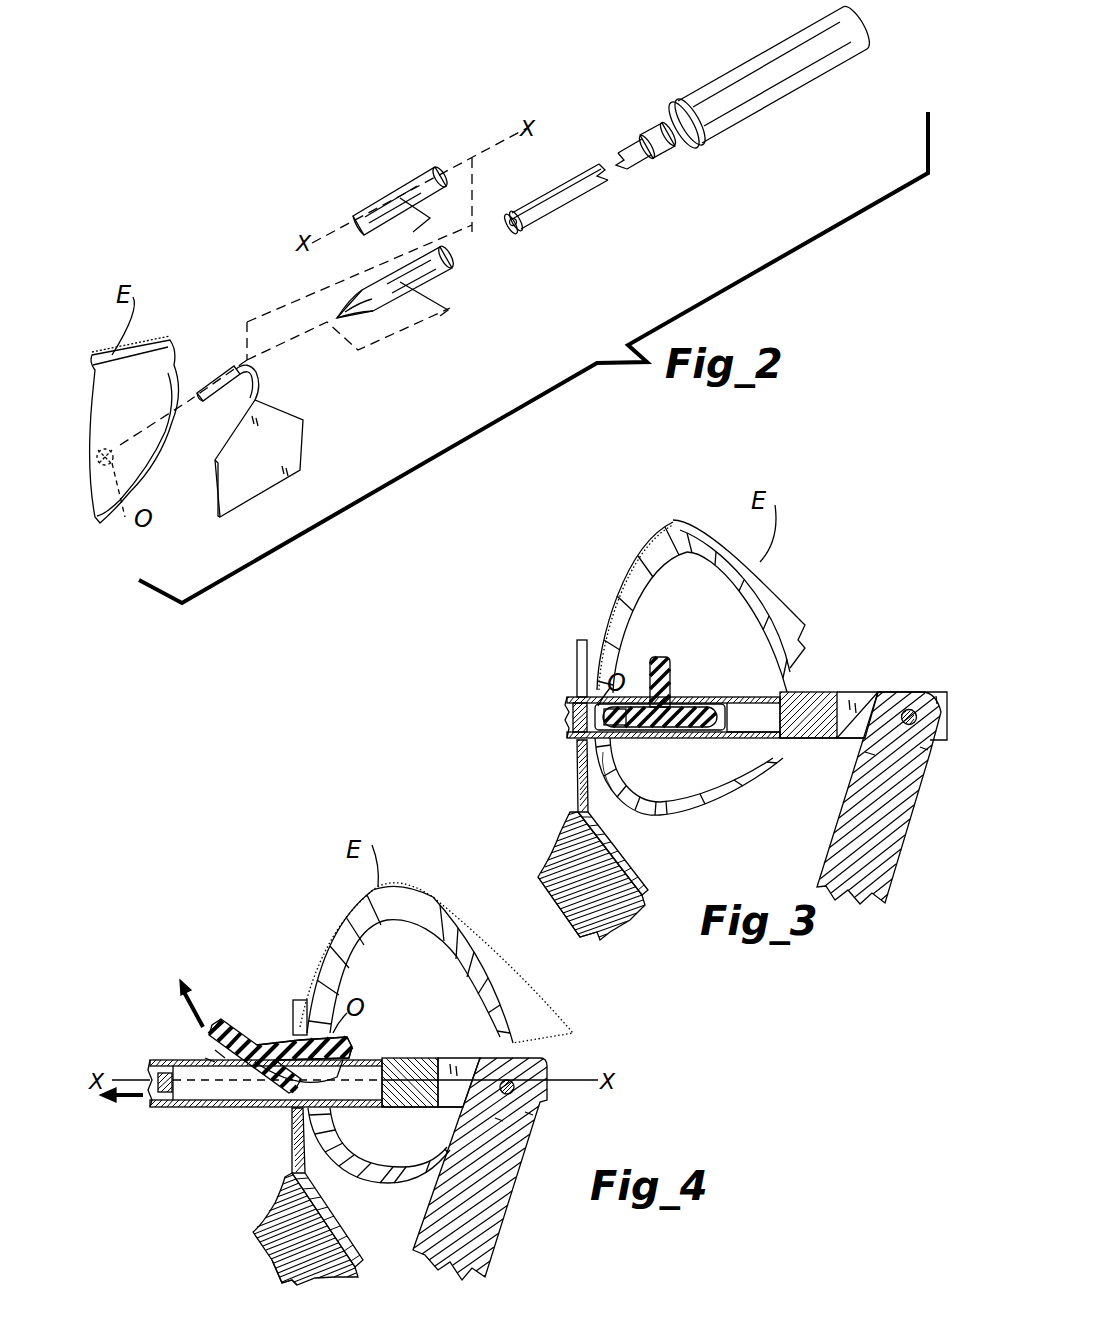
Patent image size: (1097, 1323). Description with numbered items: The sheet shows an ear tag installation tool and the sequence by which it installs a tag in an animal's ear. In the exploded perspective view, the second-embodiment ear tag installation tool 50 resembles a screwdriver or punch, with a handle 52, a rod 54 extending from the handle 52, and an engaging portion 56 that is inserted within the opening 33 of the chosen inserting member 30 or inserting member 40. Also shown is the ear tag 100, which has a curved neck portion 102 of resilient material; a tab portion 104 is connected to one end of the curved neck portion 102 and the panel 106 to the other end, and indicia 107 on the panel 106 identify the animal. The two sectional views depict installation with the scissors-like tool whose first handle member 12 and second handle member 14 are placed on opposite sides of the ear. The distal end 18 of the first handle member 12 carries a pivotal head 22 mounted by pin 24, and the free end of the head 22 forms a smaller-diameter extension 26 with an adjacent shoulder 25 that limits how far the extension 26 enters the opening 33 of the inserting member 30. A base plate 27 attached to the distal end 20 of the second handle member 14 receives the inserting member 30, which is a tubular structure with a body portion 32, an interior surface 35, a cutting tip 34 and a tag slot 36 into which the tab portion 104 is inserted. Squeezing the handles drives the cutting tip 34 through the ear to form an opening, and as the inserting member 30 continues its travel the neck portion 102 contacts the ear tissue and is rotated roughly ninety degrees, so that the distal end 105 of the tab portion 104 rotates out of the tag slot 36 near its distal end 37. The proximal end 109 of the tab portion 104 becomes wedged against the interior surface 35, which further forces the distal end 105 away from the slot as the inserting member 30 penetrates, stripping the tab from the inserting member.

In FIG. 3, the first handle member 12 is at (881, 761).
In FIG. 4, the first handle member 12 is at (502, 1169).
In FIG. 3, the second handle member 14 is at (598, 930).
In FIG. 4, the second handle member 14 is at (280, 1250).
In FIG. 3, the distal end of the first handle member 18 is at (918, 760).
In FIG. 4, the distal end of the first handle member 18 is at (513, 1112).
In FIG. 3, the distal end of the second handle member 20 is at (570, 892).
In FIG. 4, the distal end of the second handle member 20 is at (267, 1229).
In FIG. 3, the pivotal head 22 is at (860, 693).
In FIG. 4, the pivotal head 22 is at (547, 1065).
In FIG. 3, the pin 24 is at (913, 710).
In FIG. 4, the pin 24 is at (513, 1092).
In FIG. 3, the shoulder 25 is at (778, 748).
In FIG. 4, the shoulder 25 is at (374, 1060).
In FIG. 3, the extension 26 is at (790, 702).
In FIG. 4, the extension 26 is at (371, 1060).
In FIG. 3, the base plate 27 is at (578, 668).
In FIG. 4, the base plate 27 is at (314, 1003).
In FIG. 2, the inserting member 30 is at (372, 192).
In FIG. 3, the inserting member 30 is at (613, 700).
In FIG. 4, the inserting member 30 is at (239, 1066).
In FIG. 3, the body portion 32 is at (708, 700).
In FIG. 4, the body portion 32 is at (232, 1110).
In FIG. 3, the opening 33 is at (728, 720).
In FIG. 3, the cutting tip 34 is at (570, 735).
In FIG. 4, the cutting tip 34 is at (160, 1092).
In FIG. 4, the interior surface 35 is at (210, 1092).
In FIG. 3, the tag slot 36 is at (626, 738).
In FIG. 4, the tag slot 36 is at (215, 1050).
In FIG. 4, the distal end of the tag slot 37 is at (205, 1058).
In FIG. 2, the inserting member 40 is at (470, 283).
In FIG. 2, the ear tag installation tool 50 is at (685, 130).
In FIG. 2, the handle 52 is at (760, 100).
In FIG. 2, the rod 54 is at (562, 182).
In FIG. 2, the engaging portion 56 is at (532, 222).
In FIG. 2, the ear tag 100 is at (303, 422).
In FIG. 2, the curved neck portion 102 is at (255, 383).
In FIG. 3, the curved neck portion 102 is at (677, 643).
In FIG. 4, the curved neck portion 102 is at (312, 1037).
In FIG. 2, the tab portion 104 is at (199, 396).
In FIG. 3, the tab portion 104 is at (698, 700).
In FIG. 4, the tab portion 104 is at (266, 1035).
In FIG. 3, the distal end of the tab portion 105 is at (590, 740).
In FIG. 4, the distal end of the tab portion 105 is at (218, 1028).
In FIG. 2, the panel 106 is at (243, 505).
In FIG. 2, the indicia 107 is at (270, 470).
In FIG. 3, the proximal end of the tab portion 109 is at (682, 738).
In FIG. 4, the proximal end of the tab portion 109 is at (345, 1108).